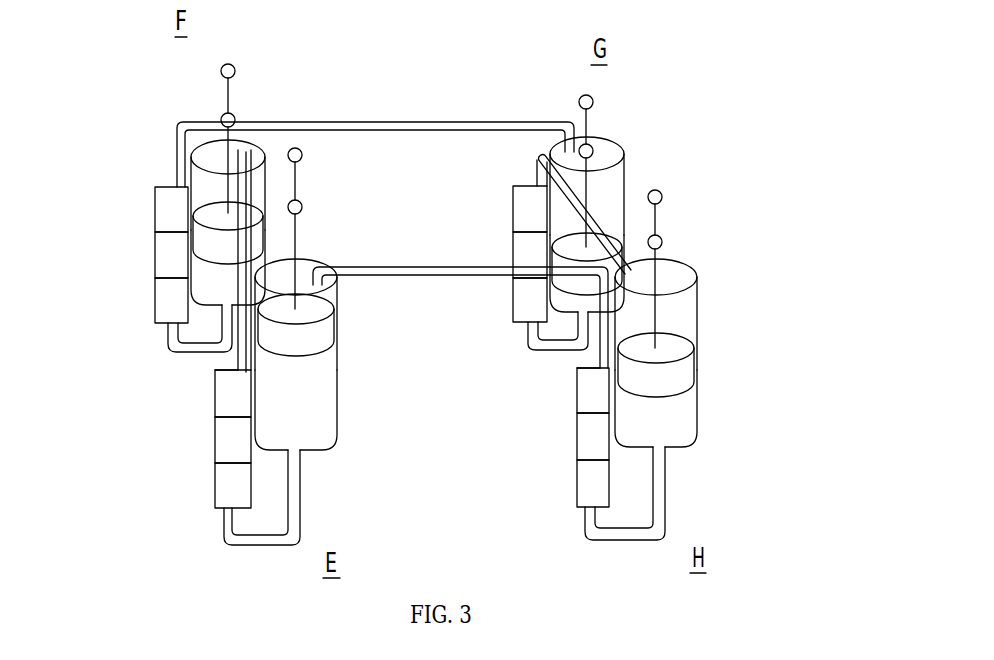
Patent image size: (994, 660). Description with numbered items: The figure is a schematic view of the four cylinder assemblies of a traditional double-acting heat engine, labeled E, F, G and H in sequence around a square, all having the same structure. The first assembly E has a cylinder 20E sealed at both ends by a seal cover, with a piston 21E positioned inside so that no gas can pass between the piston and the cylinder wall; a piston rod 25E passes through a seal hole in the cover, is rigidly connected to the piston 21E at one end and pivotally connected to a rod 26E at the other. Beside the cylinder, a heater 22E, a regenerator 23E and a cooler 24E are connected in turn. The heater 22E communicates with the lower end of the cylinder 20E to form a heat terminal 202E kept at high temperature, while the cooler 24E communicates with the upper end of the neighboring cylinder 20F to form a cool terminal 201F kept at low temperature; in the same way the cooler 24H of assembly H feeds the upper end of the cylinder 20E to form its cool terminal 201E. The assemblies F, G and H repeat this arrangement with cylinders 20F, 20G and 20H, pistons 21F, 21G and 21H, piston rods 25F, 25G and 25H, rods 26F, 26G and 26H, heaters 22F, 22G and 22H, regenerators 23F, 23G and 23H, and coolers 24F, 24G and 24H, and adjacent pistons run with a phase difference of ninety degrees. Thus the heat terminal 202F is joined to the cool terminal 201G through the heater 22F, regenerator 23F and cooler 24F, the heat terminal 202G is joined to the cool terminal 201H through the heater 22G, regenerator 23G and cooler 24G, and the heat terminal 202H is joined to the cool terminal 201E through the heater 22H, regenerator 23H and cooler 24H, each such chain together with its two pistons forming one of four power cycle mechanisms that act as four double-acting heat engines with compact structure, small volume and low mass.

The cylinder 20E is at (382, 370).
The cylinder 20F is at (148, 148).
The cylinder 20G is at (642, 142).
The cylinder 20H is at (722, 291).
The cool terminal 201E is at (403, 305).
The cool terminal 201F is at (208, 188).
The cool terminal 201G is at (610, 198).
The cool terminal 201H is at (682, 313).
The heat terminal 202E is at (410, 410).
The heat terminal 202F is at (213, 288).
The heat terminal 202G is at (568, 303).
The heat terminal 202H is at (680, 417).
The piston 21E is at (322, 335).
The piston 21F is at (208, 250).
The piston 21G is at (572, 282).
The piston 21H is at (670, 377).
The heater 22E is at (223, 485).
The heater 22F is at (163, 292).
The heater 22G is at (530, 288).
The heater 22H is at (595, 478).
The regenerator 23E is at (228, 438).
The regenerator 23F is at (165, 252).
The regenerator 23G is at (525, 250).
The regenerator 23H is at (595, 435).
The cooler 24E is at (228, 392).
The cooler 24F is at (165, 212).
The cooler 24G is at (525, 212).
The cooler 24H is at (595, 387).
The piston rod 25E is at (295, 237).
The piston rod 25F is at (227, 145).
The piston rod 25G is at (592, 187).
The piston rod 25H is at (655, 262).
The rod 26E is at (297, 180).
The rod 26F is at (225, 90).
The rod 26G is at (645, 118).
The rod 26H is at (655, 217).